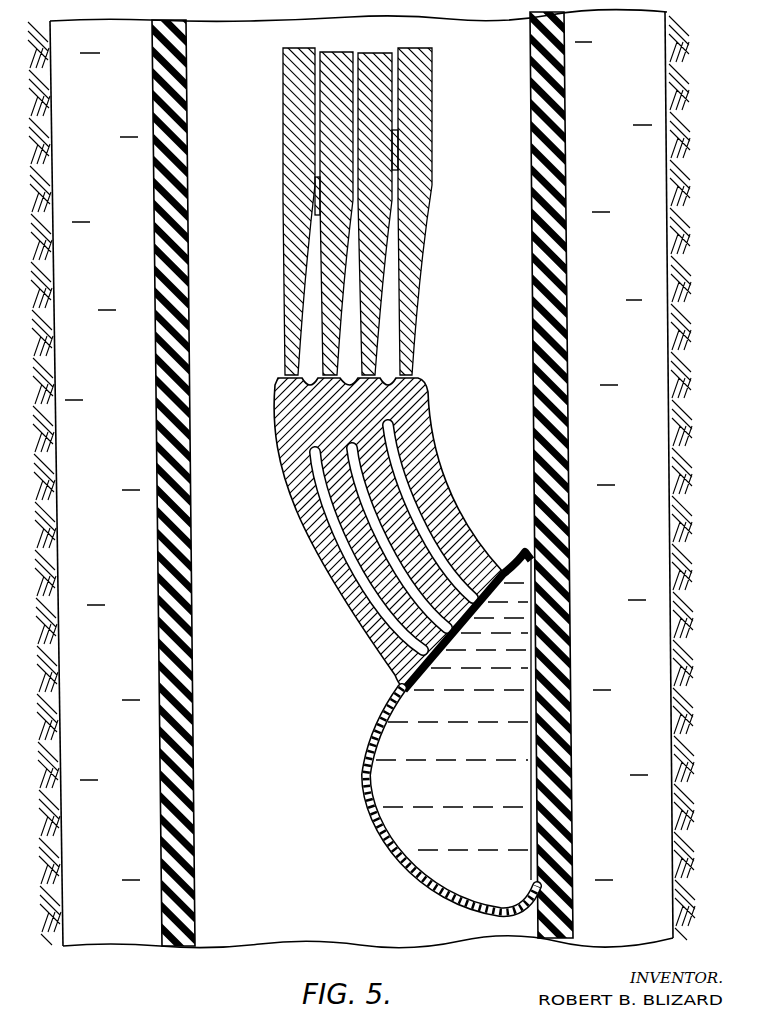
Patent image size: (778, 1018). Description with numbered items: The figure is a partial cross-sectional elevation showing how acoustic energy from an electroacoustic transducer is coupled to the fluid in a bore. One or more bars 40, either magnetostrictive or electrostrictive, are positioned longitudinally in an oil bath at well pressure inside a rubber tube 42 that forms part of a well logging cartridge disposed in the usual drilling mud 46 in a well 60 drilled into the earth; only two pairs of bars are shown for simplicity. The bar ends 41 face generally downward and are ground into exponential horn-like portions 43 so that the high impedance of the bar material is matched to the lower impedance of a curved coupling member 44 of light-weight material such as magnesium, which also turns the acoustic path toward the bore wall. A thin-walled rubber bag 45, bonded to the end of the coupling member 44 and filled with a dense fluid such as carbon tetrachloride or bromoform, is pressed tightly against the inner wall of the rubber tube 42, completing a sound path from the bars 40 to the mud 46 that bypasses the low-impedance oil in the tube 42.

The bars 40 is at (389, 210).
The bar ends 41 is at (432, 186).
The rubber tube 42 is at (565, 156).
The exponential horn-like portions 43 is at (434, 301).
The curved coupling member 44 is at (445, 437).
The rubber bag 45 is at (366, 742).
The drilling mud 46 is at (637, 296).
The well 60 is at (666, 436).